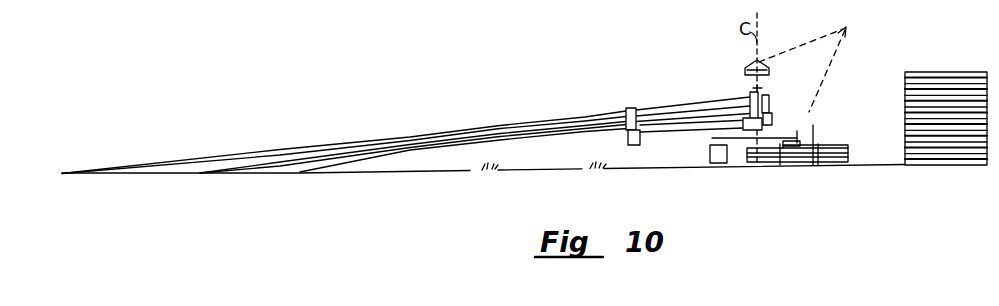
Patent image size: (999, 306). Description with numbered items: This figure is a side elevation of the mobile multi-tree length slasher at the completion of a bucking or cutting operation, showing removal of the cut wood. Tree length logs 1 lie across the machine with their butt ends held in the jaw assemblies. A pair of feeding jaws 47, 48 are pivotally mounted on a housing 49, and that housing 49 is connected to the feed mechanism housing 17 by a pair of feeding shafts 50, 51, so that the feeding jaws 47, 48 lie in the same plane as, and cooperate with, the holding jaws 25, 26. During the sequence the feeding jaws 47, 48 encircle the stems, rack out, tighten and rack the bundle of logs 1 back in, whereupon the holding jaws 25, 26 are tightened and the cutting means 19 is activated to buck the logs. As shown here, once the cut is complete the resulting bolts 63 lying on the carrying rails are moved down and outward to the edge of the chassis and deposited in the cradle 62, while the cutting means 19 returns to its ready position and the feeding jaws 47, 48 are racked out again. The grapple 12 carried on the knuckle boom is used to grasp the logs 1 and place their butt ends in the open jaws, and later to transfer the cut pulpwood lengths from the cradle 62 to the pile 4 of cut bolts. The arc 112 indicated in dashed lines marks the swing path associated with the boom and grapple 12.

The tree length logs 1 is at (327, 147).
The pile of cut pulpwood length bolts 4 is at (966, 72).
The grapple 12 is at (812, 127).
The feed mechanism housing 17 is at (772, 121).
The cutting means 19 is at (769, 101).
The holding jaw 25 is at (780, 99).
The holding jaw 26 is at (757, 94).
The feeding jaw 47 is at (660, 103).
The feeding jaw 48 is at (632, 107).
The housing 49 is at (627, 136).
The feeding shaft 50 is at (691, 143).
The feeding shaft 51 is at (683, 132).
The cradle 62 is at (782, 164).
The cut bolts 63 is at (848, 151).
The swing path 112 is at (802, 69).